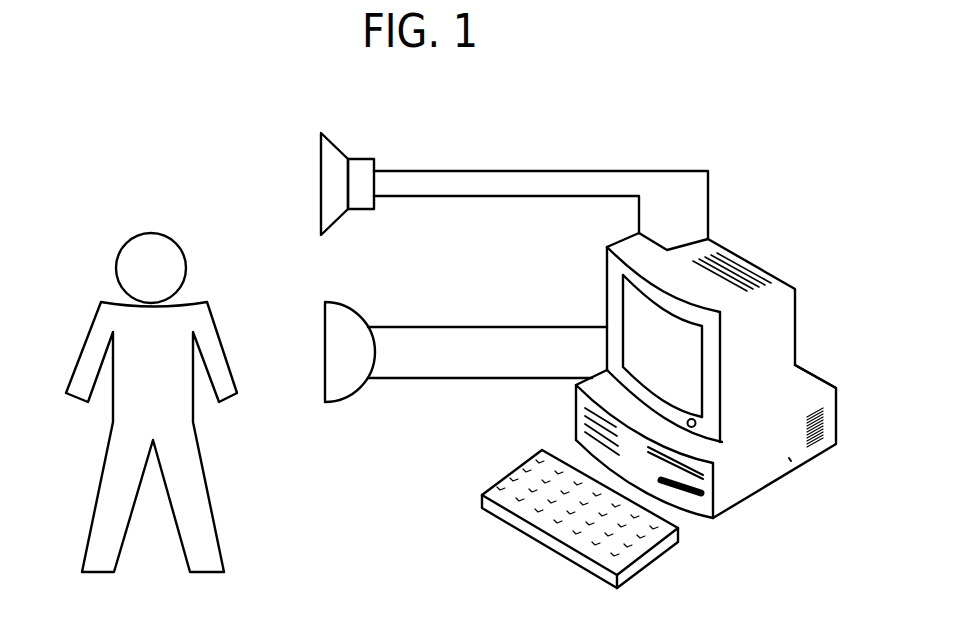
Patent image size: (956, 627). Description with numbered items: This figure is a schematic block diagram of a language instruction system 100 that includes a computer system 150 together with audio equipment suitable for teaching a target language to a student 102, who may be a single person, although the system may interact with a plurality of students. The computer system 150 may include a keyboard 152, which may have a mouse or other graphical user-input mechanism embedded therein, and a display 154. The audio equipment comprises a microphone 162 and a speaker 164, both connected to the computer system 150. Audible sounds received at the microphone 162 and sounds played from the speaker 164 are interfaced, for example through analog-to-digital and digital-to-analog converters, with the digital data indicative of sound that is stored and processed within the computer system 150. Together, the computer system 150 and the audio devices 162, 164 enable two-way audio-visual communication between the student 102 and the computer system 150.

The language instruction system 100 is at (598, 124).
The student 102 is at (137, 402).
The computer system 150 is at (706, 375).
The keyboard 152 is at (580, 519).
The display 154 is at (791, 413).
The microphone 162 is at (466, 343).
The speaker 164 is at (514, 182).